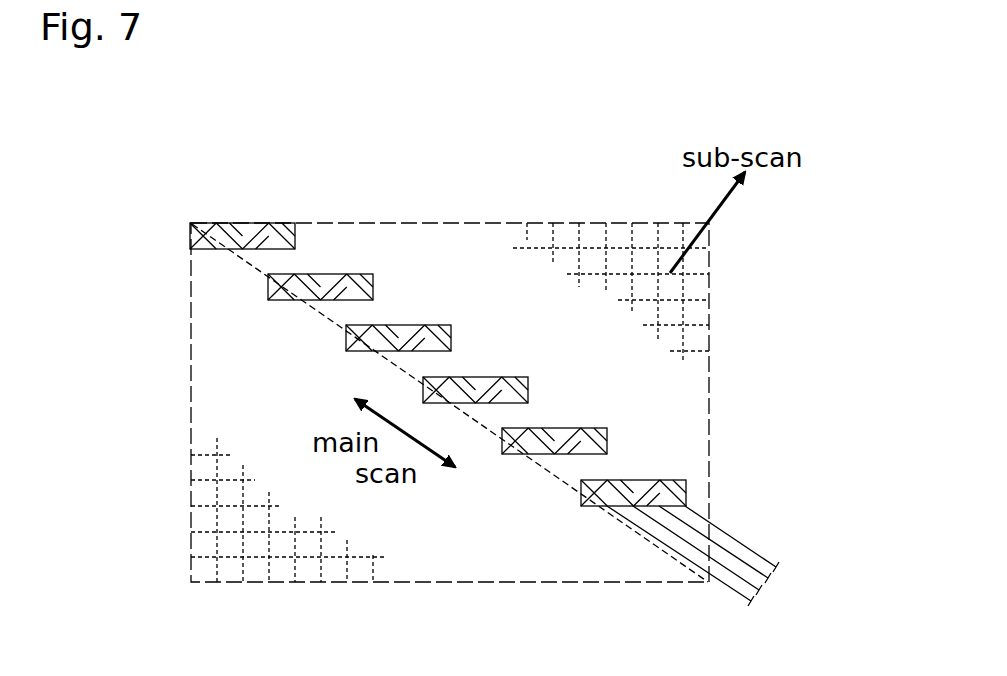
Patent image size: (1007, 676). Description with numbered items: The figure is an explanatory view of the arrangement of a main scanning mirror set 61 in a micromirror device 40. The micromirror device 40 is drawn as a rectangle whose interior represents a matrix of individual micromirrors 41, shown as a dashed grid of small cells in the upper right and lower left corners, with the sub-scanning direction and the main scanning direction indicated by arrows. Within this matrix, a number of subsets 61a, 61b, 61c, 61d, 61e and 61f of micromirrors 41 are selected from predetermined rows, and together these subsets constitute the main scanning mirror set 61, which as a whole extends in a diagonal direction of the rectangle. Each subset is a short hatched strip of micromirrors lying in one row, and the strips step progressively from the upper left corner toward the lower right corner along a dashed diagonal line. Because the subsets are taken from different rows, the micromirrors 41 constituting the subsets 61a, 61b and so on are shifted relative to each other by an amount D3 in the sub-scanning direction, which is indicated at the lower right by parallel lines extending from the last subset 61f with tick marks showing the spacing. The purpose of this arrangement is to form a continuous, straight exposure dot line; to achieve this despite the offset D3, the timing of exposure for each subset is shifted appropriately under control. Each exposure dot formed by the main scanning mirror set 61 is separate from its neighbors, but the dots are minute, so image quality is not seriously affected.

The micromirror device 40 is at (598, 214).
The micromirrors 41 is at (698, 286).
The main scanning mirror set 61 is at (477, 343).
The subset 61a is at (252, 221).
The subset 61b is at (336, 271).
The subset 61c is at (413, 324).
The subset 61d is at (489, 376).
The subset 61e is at (567, 427).
The subset 61f is at (648, 479).
The shift amount in the sub-scanning direction D3 is at (755, 595).